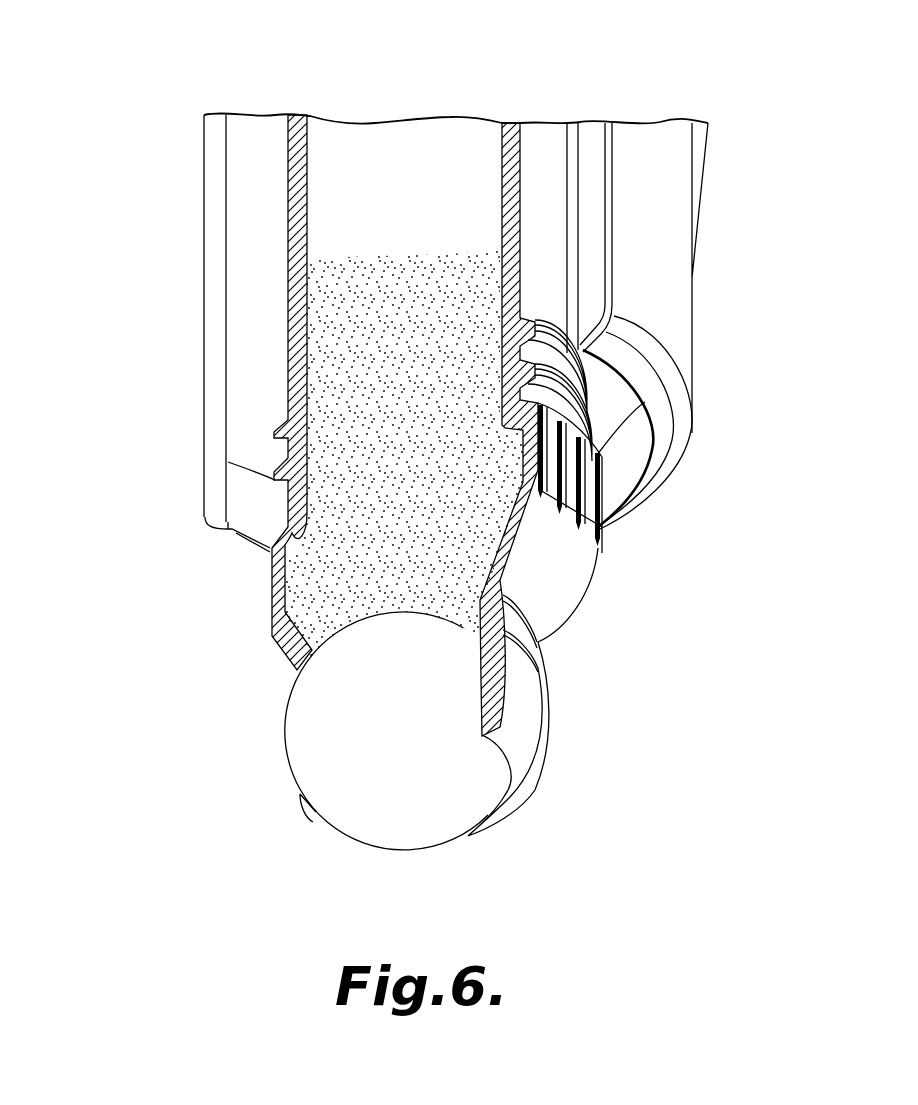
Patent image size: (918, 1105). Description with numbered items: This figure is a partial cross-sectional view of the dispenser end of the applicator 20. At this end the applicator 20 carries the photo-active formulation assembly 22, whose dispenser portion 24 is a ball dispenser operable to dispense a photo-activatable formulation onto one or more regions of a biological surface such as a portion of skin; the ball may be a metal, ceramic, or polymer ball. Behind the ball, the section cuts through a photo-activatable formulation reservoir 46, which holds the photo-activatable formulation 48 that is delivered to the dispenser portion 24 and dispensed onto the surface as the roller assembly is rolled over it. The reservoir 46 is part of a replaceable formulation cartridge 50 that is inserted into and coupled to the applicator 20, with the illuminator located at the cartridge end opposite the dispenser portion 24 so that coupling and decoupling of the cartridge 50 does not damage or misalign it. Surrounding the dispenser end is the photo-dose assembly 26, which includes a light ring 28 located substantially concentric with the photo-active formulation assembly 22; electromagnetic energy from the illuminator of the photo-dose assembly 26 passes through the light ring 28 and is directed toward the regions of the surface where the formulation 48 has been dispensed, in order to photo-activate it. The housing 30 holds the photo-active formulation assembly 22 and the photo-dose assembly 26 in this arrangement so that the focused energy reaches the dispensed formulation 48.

The applicator 20 is at (131, 447).
The photo-active formulation assembly 22 is at (572, 686).
The dispenser portion 24 is at (298, 722).
The photo-dose assembly 26 is at (243, 551).
The light ring 28 is at (668, 425).
The housing 30 is at (685, 302).
The photo-activatable formulation reservoir 46 is at (330, 205).
The photo-activatable formulation 48 is at (350, 378).
The replaceable formulation cartridge 50 is at (298, 302).